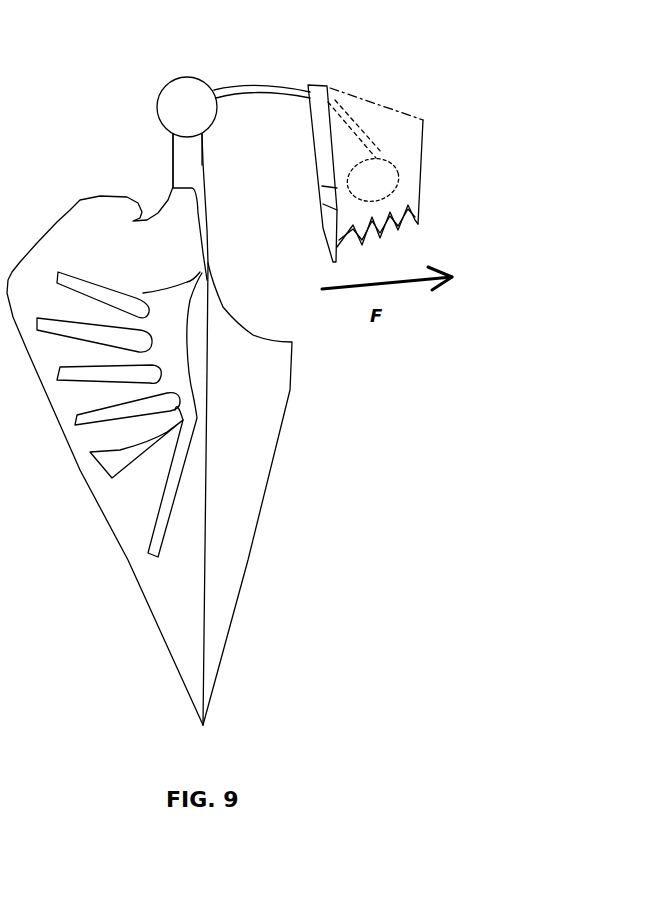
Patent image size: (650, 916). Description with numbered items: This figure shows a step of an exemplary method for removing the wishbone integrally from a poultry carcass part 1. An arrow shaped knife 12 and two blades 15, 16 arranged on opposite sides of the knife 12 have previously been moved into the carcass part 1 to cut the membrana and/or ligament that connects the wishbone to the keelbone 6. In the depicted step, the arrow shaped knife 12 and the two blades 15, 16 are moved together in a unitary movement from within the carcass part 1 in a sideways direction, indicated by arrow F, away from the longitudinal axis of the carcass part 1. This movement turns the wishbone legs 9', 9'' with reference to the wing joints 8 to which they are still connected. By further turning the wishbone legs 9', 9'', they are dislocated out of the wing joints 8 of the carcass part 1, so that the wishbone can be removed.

The carcass part 1 is at (295, 495).
The keelbone 6 is at (192, 162).
The wing joints 8 is at (205, 80).
The wishbone leg 9' is at (389, 105).
The wishbone leg 9'' is at (372, 180).
The arrow shaped knife 12 is at (317, 197).
The blade 15 is at (413, 142).
The blade 16 is at (377, 226).